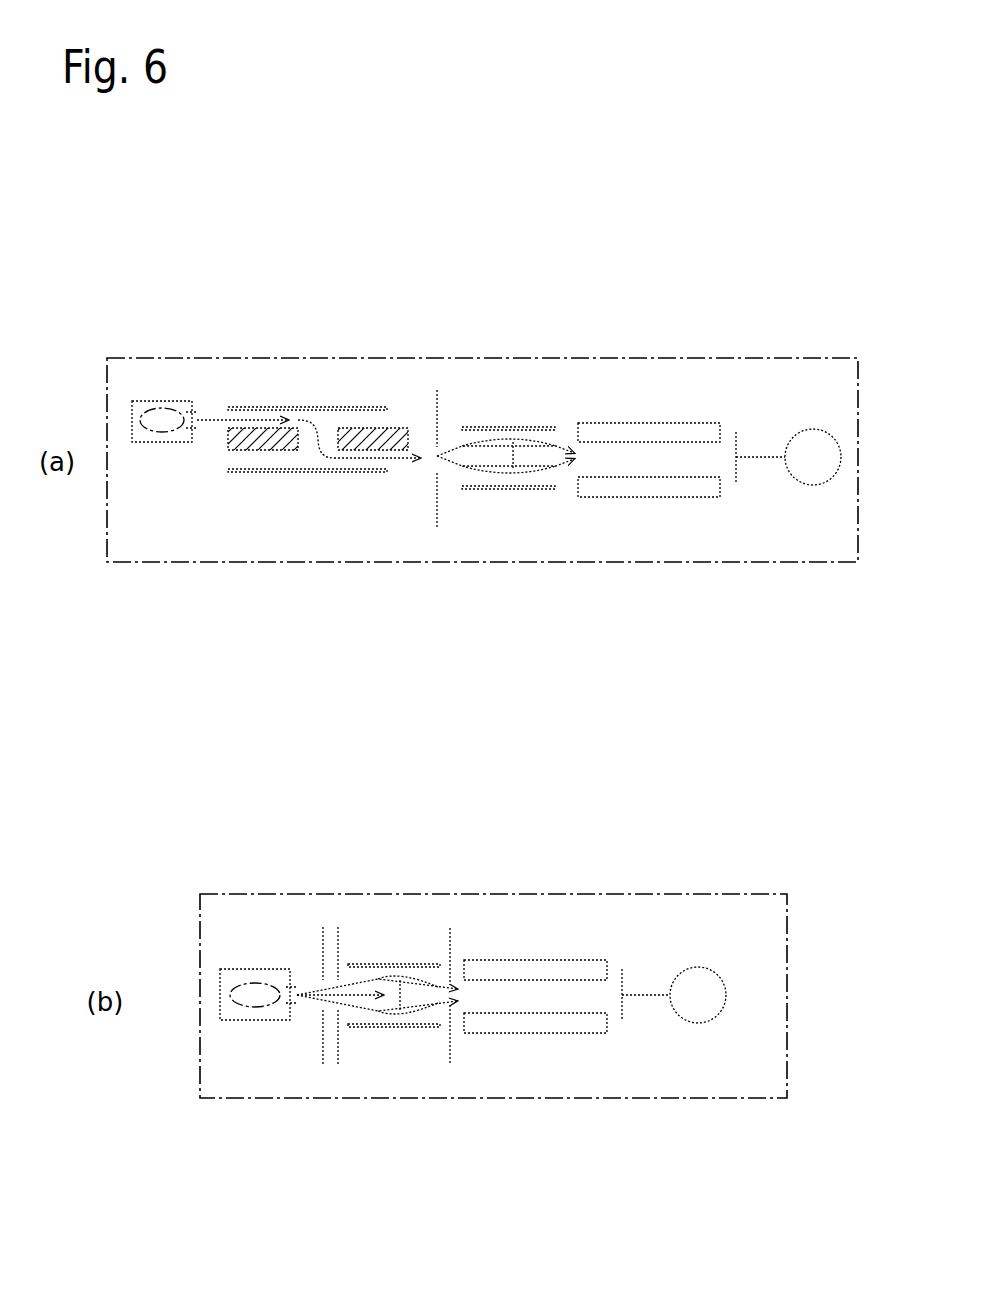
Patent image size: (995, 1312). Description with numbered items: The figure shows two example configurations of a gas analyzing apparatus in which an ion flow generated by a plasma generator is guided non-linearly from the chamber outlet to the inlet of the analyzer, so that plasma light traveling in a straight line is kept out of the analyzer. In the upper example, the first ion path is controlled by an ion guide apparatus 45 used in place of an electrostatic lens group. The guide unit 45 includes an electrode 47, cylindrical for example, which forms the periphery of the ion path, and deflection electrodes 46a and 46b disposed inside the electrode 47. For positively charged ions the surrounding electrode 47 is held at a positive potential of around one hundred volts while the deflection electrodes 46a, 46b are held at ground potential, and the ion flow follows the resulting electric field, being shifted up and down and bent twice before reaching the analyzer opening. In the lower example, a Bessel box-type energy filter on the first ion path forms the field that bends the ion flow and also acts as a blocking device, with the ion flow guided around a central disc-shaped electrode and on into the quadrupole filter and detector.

The ion guide apparatus 45 is at (313, 479).
The deflection electrode 46a is at (271, 451).
The deflection electrode 46b is at (393, 451).
The electrode 47 is at (270, 407).